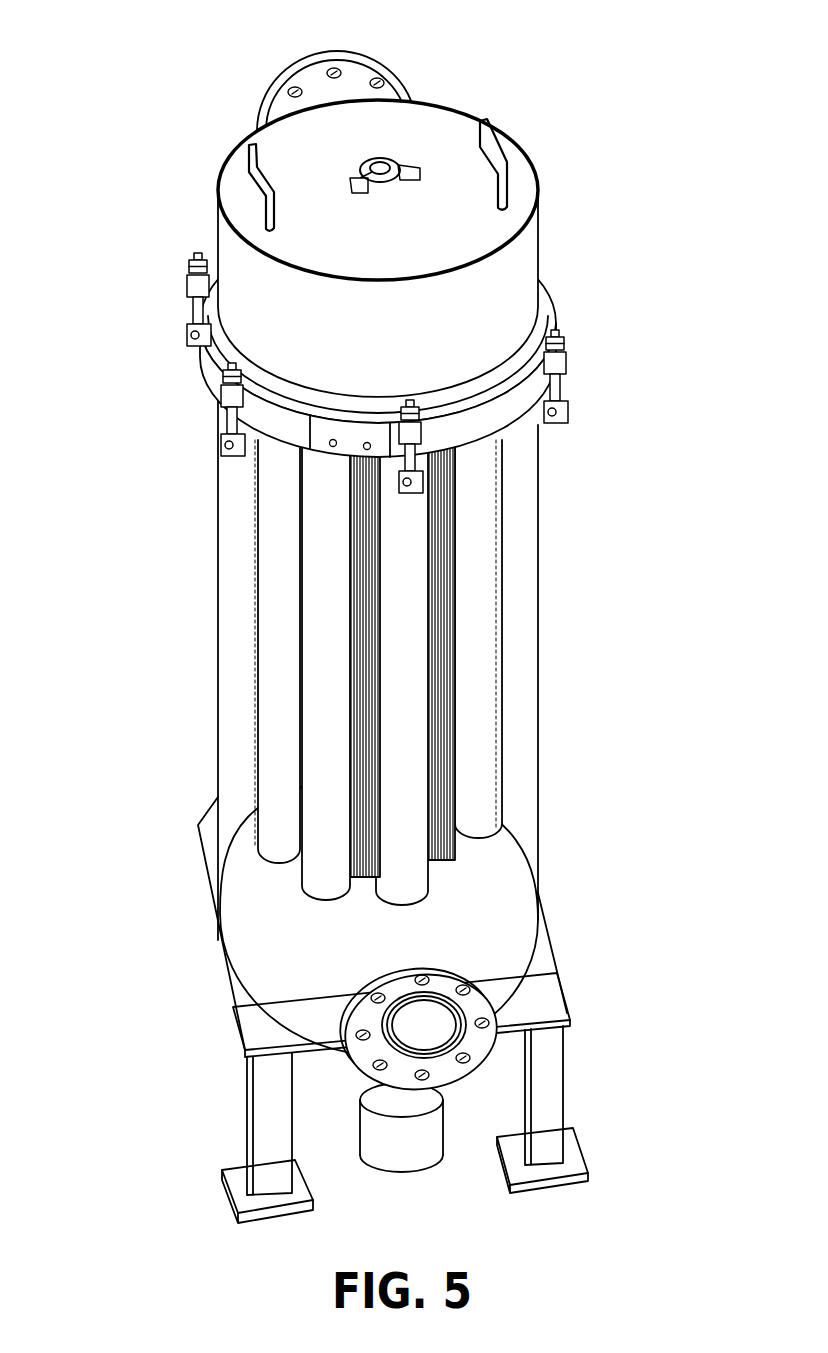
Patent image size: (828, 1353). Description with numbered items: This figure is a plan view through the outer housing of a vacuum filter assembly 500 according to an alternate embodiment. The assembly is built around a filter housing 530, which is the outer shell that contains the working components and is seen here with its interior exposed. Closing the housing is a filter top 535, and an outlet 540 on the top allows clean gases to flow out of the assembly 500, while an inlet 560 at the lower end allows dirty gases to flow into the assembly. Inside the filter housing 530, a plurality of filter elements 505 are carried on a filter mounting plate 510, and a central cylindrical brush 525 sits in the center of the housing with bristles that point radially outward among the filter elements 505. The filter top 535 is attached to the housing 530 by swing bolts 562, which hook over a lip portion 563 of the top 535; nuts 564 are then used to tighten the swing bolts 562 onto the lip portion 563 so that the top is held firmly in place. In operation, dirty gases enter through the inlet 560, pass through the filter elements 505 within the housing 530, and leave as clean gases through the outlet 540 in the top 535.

The vacuum filter assembly 500 is at (572, 473).
The filter elements 505 is at (327, 820).
The filter mounting plate 510 is at (505, 402).
The central cylindrical brush 525 is at (443, 785).
The filter housing 530 is at (213, 657).
The filter top 535 is at (540, 236).
The outlet 540 is at (349, 53).
The inlet 560 is at (498, 1013).
The swing bolts 562 is at (230, 422).
The lip portion 563 is at (212, 317).
The nuts 564 is at (189, 262).